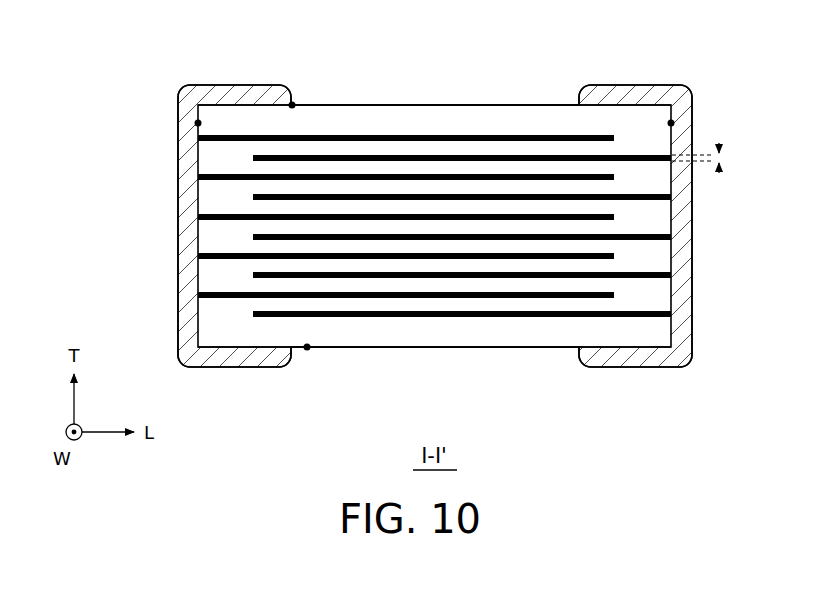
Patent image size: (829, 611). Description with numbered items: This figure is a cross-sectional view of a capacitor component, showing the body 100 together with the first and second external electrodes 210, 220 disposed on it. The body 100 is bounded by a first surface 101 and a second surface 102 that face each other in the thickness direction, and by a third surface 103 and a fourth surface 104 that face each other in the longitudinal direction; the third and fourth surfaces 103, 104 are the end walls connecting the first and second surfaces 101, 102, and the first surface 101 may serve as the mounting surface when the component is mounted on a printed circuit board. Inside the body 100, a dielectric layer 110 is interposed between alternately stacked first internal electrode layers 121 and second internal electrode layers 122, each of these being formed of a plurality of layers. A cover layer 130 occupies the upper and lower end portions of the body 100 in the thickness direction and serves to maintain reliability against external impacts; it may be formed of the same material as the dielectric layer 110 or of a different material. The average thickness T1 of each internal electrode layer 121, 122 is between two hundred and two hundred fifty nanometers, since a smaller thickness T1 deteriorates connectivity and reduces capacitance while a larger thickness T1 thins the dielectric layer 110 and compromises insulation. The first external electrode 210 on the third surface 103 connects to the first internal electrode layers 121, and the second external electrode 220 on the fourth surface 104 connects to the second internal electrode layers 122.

The body 100 is at (588, 96).
The dielectric layer 110 is at (498, 150).
The first internal electrode layer 121 is at (345, 136).
The second internal electrode layer 122 is at (404, 156).
The cover layer 130 is at (555, 112).
The first surface 101 is at (307, 350).
The second surface 102 is at (292, 102).
The third surface 103 is at (196, 123).
The fourth surface 104 is at (673, 123).
The first external electrode 210 is at (192, 250).
The second external electrode 220 is at (680, 249).
The average thickness of internal electrode layer T1 is at (713, 158).